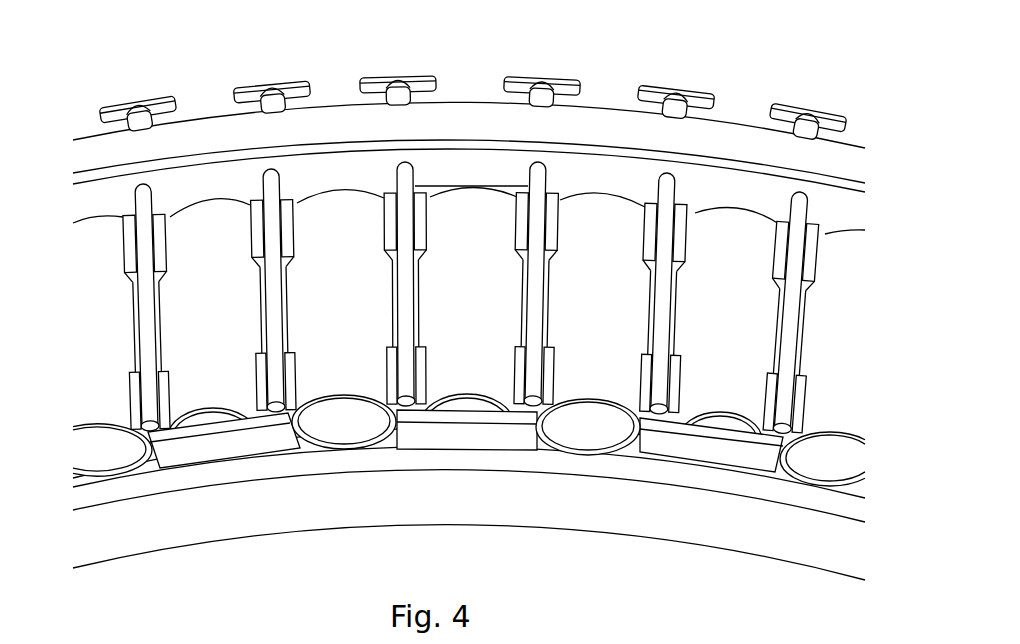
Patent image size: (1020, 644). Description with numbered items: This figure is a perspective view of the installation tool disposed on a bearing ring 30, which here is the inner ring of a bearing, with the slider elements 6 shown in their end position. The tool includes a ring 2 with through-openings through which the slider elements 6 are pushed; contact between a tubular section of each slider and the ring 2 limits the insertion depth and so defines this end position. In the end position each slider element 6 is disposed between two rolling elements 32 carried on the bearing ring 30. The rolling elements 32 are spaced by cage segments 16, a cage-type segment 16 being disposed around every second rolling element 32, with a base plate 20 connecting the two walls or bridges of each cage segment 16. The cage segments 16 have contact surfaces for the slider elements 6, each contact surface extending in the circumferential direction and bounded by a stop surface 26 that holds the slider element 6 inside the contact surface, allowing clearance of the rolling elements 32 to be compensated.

The ring 2 is at (840, 203).
The slider elements 6 is at (677, 98).
The cage segments 16 is at (670, 212).
The base plate 20 is at (687, 447).
The stop surface 26 is at (645, 240).
The bearing ring 30 is at (773, 543).
The rolling elements 32 is at (603, 217).